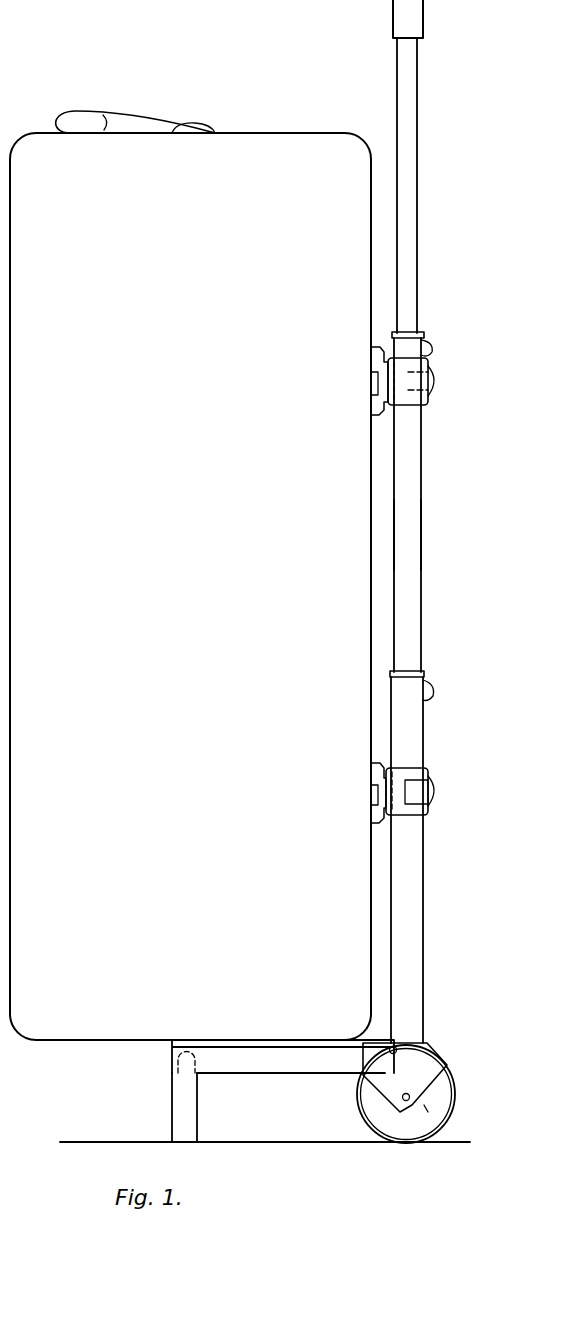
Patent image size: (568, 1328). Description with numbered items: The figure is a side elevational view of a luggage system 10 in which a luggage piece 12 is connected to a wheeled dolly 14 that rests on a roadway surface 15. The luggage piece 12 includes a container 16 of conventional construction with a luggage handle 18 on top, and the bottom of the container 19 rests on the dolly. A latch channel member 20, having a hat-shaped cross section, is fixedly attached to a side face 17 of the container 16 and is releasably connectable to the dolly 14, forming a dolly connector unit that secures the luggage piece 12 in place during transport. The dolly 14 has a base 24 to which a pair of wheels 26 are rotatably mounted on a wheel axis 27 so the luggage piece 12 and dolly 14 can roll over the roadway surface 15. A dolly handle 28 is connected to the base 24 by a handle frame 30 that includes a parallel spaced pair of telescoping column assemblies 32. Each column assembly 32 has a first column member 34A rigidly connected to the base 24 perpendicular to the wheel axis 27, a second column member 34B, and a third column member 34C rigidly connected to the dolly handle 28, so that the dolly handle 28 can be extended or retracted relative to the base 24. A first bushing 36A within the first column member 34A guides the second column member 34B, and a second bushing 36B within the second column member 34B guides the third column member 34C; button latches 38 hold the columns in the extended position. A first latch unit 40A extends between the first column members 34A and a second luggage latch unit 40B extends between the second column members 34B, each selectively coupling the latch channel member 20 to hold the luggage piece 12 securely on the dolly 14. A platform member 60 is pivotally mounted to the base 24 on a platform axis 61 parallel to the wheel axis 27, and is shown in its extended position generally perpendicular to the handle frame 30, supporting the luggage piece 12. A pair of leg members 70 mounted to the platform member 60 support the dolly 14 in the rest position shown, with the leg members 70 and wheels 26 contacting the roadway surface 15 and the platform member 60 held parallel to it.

The luggage system 10 is at (79, 1115).
The luggage piece 12 is at (80, 1040).
The dolly 14 is at (172, 1076).
The roadway surface 15 is at (140, 1142).
The container 16 is at (154, 989).
The side face 17 is at (372, 952).
The luggage handle 18 is at (80, 110).
The container bottom 19 is at (110, 1042).
The latch channel member 20 is at (378, 422).
The base 24 is at (414, 1080).
The wheels 26 is at (360, 1124).
The wheel axis 27 is at (426, 1110).
The dolly handle 28 is at (393, 16).
The handle frame 30 is at (394, 527).
The telescoping column assembly 32 is at (394, 558).
The first column member 34A is at (391, 907).
The second column member 34B is at (394, 605).
The third column member 34C is at (397, 96).
The first bushing 36A is at (391, 674).
The second bushing 36B is at (395, 334).
The button latch 38 is at (428, 350).
The first latch unit 40A is at (405, 816).
The second luggage latch unit 40B is at (405, 406).
The platform member 60 is at (265, 1018).
The platform axis 61 is at (386, 1058).
The leg member 70 is at (197, 1116).